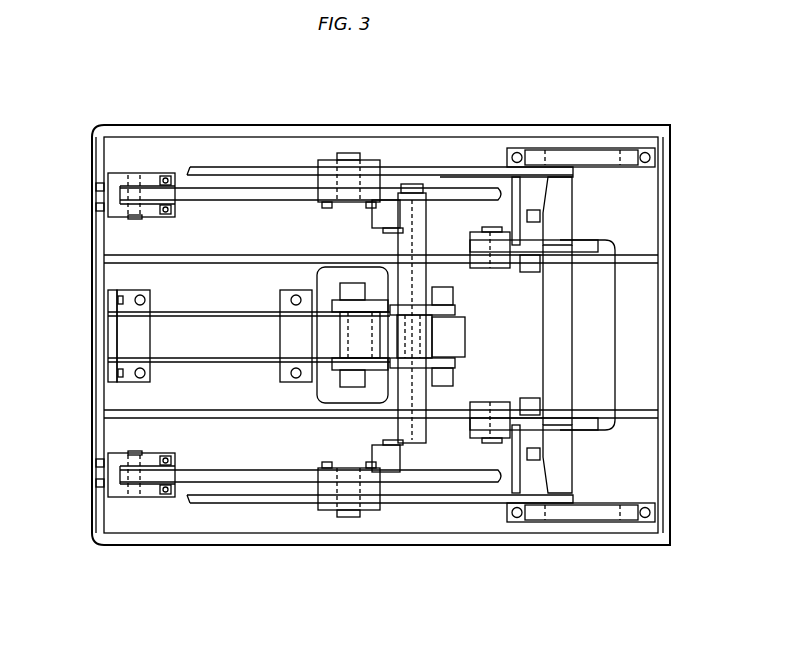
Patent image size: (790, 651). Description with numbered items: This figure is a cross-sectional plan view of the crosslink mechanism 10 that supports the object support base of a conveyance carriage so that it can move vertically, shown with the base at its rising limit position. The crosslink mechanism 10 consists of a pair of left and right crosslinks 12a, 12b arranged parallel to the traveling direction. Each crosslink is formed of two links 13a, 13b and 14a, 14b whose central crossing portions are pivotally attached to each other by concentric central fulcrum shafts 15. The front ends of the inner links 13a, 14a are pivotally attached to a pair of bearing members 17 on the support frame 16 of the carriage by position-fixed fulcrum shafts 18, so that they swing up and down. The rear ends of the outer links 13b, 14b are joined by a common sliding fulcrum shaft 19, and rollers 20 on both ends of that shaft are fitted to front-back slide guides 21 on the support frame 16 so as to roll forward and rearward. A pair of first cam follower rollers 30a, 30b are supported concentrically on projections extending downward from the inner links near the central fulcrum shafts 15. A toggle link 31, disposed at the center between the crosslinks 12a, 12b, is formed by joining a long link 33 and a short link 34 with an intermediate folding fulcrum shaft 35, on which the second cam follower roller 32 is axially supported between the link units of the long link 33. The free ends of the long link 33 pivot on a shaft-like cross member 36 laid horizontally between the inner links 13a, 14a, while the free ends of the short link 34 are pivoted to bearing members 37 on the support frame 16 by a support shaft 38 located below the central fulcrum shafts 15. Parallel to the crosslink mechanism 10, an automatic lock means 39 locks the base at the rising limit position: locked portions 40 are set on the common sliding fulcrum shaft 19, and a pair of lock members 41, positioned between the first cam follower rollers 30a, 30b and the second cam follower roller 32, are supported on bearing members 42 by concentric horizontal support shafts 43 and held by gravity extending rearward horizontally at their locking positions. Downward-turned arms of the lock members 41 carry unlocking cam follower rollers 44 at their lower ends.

The crosslink mechanism 10 is at (381, 350).
The crosslink 12a is at (290, 503).
The crosslink 12b is at (290, 165).
The link 13a is at (245, 472).
The link 13b is at (440, 503).
The link 14a is at (250, 200).
The link 14b is at (445, 168).
The central fulcrum shaft 15 is at (345, 153).
The support frame 16 is at (232, 128).
The bearing member 17 is at (115, 195).
The position-fixed fulcrum shaft 18 is at (140, 175).
The common sliding fulcrum shaft 19 is at (566, 335).
The roller 20 is at (577, 148).
The front-back slide guide 21 is at (620, 150).
The first cam follower roller 30a is at (388, 475).
The first cam follower roller 30b is at (390, 200).
The toggle link 31 is at (380, 268).
The second cam follower roller 32 is at (455, 350).
The long link 33 is at (355, 382).
The short link 34 is at (457, 325).
The intermediate folding fulcrum shaft 35 is at (445, 280).
The shaft-like cross member 36 is at (415, 400).
The bearing member 37 is at (340, 358).
The support shaft 38 is at (322, 285).
The automatic lock means 39 is at (612, 242).
The locked portion 40 is at (572, 292).
The lock member 41 is at (600, 268).
The bearing member 42 is at (472, 248).
The support shaft 43 is at (478, 232).
The unlocking cam follower roller 44 is at (530, 250).